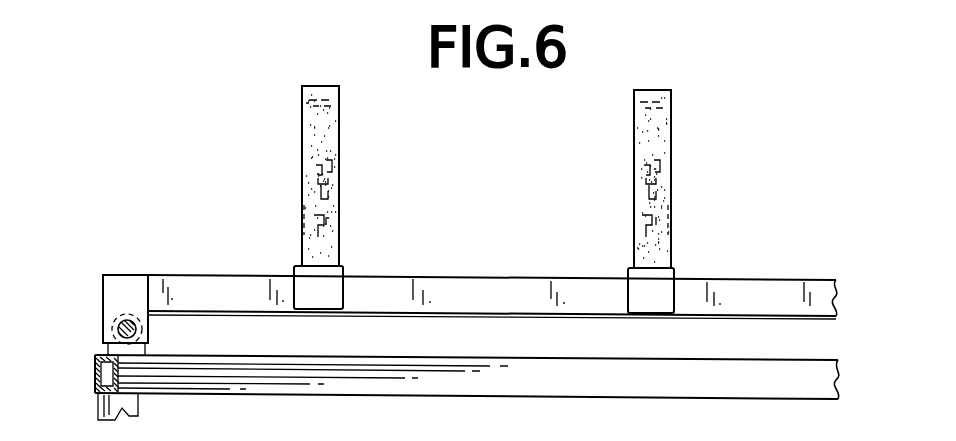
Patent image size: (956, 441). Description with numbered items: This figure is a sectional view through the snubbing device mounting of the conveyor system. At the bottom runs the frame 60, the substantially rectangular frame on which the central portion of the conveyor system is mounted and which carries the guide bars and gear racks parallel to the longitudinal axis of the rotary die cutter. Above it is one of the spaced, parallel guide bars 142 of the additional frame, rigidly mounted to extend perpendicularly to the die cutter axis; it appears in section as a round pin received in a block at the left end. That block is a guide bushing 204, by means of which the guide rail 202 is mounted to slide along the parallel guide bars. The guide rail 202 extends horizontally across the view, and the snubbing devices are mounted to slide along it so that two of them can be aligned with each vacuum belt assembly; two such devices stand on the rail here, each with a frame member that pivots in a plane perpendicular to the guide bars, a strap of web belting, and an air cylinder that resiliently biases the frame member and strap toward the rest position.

The frame 60 is at (340, 385).
The guide bar 142 is at (127, 319).
The guide rail 202 is at (510, 296).
The guide bushing 204 is at (108, 298).